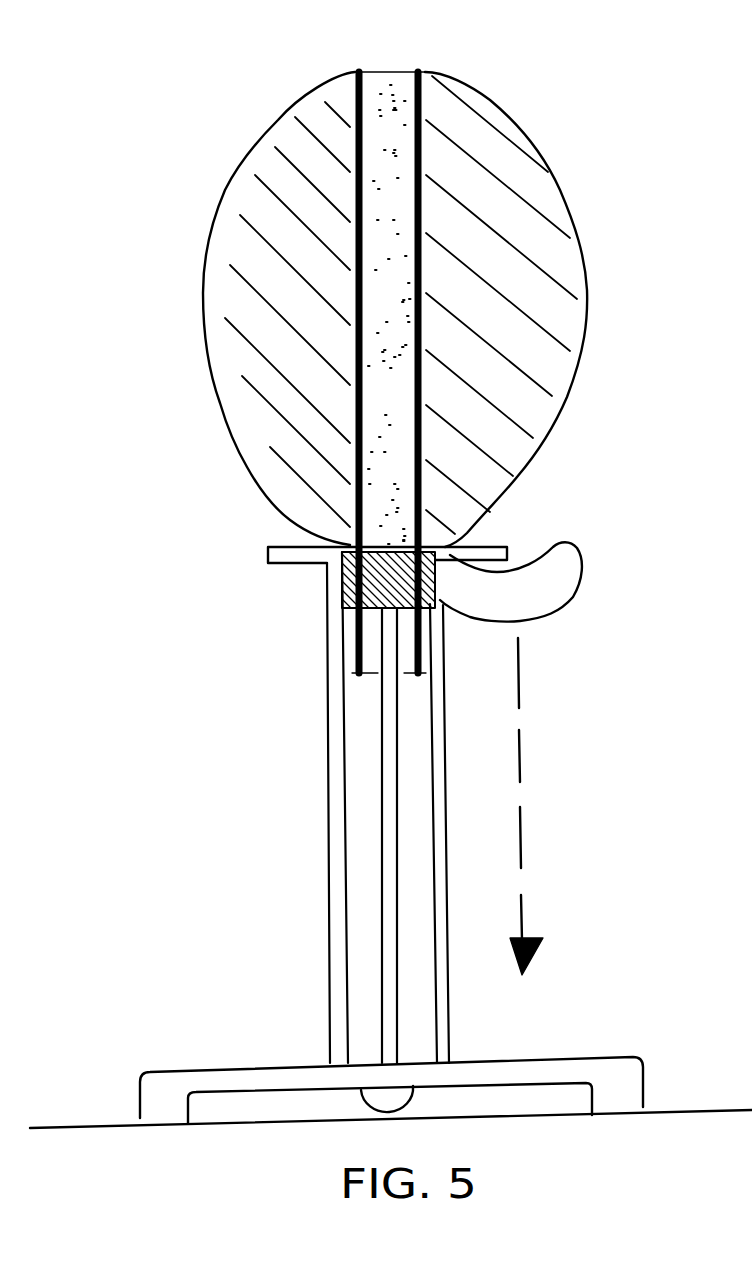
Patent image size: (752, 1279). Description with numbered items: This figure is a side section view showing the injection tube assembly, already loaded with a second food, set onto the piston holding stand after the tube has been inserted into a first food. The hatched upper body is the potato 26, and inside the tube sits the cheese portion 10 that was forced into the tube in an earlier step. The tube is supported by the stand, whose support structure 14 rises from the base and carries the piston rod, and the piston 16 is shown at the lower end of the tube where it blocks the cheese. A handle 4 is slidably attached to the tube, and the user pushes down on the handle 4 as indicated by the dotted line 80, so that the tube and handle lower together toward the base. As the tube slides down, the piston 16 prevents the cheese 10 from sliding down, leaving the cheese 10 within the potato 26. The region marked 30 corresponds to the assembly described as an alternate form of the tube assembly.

The cheese portion 10 is at (408, 68).
The potato 26 is at (557, 325).
The piston 16 is at (340, 543).
The alternate tube assembly 30 is at (497, 533).
The handle 4 is at (560, 585).
The support structure 14 is at (327, 757).
The dotted line 80 is at (523, 833).